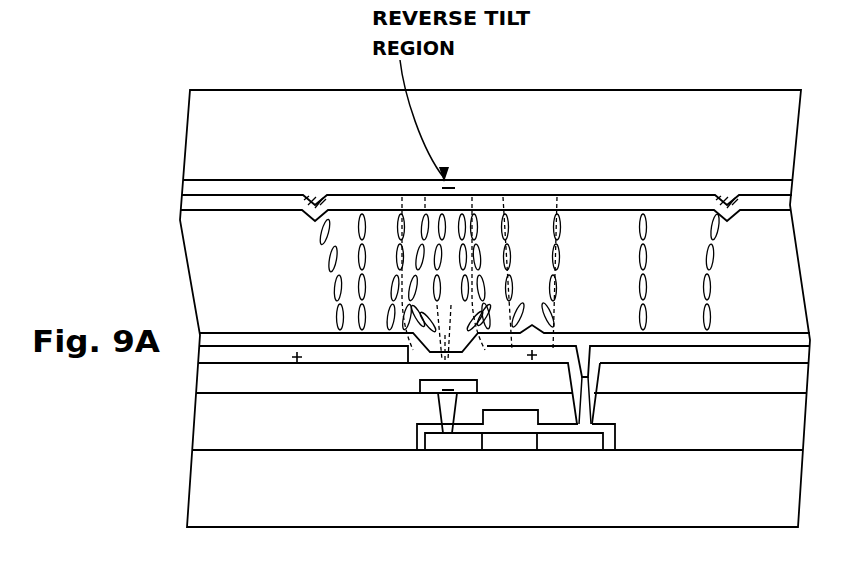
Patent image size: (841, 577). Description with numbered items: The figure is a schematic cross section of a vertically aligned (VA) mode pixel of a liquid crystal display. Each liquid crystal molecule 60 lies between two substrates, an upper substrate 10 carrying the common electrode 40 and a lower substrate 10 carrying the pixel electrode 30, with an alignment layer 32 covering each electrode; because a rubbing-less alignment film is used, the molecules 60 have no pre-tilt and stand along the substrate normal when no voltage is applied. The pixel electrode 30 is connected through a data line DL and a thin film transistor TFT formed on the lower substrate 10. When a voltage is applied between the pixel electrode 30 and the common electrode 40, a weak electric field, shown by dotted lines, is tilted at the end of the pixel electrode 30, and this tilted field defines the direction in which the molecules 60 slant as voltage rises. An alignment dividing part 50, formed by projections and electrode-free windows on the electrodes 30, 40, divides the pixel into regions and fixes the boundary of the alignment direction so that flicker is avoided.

The substrate 10 is at (493, 317).
The pixel electrode 30 is at (320, 362).
The alignment layer 32 is at (577, 203).
The common electrode 40 is at (525, 187).
The alignment dividing part 50 is at (727, 193).
The liquid crystal molecule 60 is at (400, 243).
The data line DL is at (437, 392).
The thin film transistor TFT is at (516, 453).